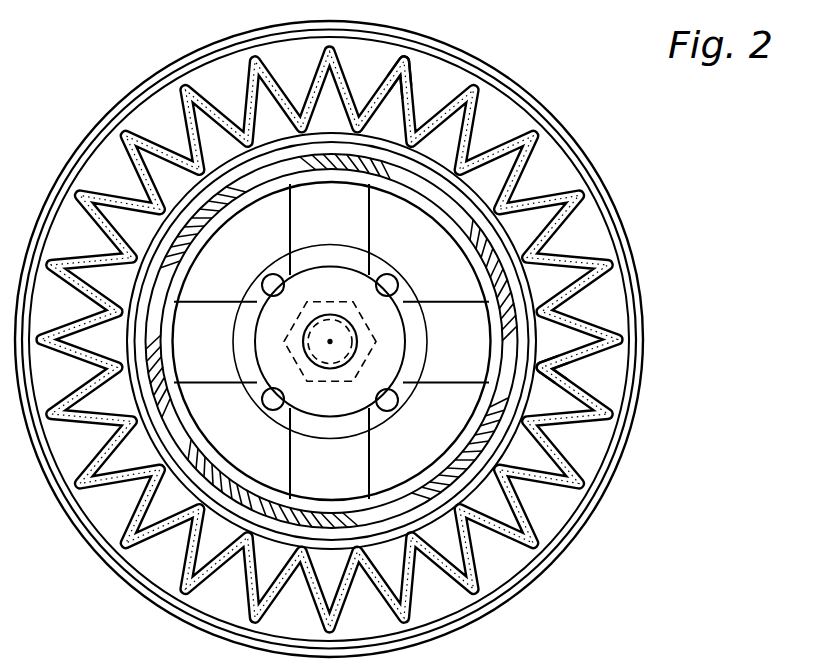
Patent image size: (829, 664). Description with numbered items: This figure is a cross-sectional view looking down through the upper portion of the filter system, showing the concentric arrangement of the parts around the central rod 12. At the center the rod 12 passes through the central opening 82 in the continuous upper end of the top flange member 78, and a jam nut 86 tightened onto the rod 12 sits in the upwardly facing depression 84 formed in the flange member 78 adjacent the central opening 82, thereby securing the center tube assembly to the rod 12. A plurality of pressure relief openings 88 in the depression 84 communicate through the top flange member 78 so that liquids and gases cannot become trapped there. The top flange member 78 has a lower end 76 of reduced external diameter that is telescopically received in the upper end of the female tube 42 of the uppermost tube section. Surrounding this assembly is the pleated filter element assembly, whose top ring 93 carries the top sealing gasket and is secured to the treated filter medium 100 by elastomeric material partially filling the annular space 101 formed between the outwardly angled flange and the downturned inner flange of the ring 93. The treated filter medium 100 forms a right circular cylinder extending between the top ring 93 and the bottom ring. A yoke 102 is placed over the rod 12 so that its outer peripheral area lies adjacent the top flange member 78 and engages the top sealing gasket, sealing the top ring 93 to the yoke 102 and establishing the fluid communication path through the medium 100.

The rod 12 is at (330, 328).
The female tube 42 is at (512, 285).
The lower end 76 is at (478, 432).
The top flange member 78 is at (278, 470).
The central opening 82 is at (406, 356).
The upwardly facing depression 84 is at (257, 358).
The jam nut 86 is at (398, 310).
The pressure relief openings 88 is at (268, 284).
The top ring 93 is at (575, 151).
The treated filter medium 100 is at (512, 143).
The annular space 101 is at (438, 88).
The yoke 102 is at (522, 398).